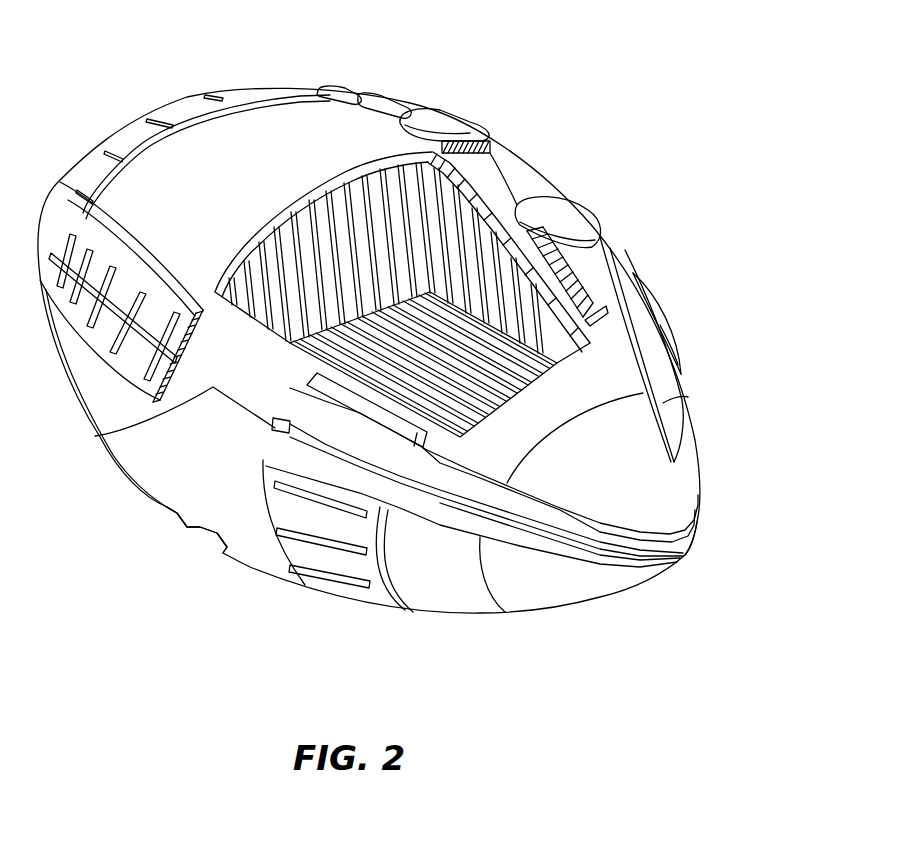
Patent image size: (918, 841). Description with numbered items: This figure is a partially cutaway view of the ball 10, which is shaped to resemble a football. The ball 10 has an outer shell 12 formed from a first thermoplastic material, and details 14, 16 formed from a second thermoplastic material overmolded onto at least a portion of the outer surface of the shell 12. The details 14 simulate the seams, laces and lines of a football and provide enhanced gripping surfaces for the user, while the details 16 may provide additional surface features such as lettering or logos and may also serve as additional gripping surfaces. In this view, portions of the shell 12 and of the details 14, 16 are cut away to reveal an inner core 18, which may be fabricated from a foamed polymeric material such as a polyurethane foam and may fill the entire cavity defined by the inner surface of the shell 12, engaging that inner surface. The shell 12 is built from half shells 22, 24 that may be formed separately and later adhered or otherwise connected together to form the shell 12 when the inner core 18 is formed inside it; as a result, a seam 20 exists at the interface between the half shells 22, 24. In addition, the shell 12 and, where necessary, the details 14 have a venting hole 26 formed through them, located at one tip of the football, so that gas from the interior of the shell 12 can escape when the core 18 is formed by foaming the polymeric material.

The ball 10 is at (508, 58).
The outer shell 12 is at (523, 177).
The details 14 is at (437, 113).
The details 16 is at (188, 537).
The inner core 18 is at (530, 303).
The seam 20 is at (95, 436).
The half shell 22 is at (263, 130).
The half shell 24 is at (173, 463).
The venting hole 26 is at (688, 556).